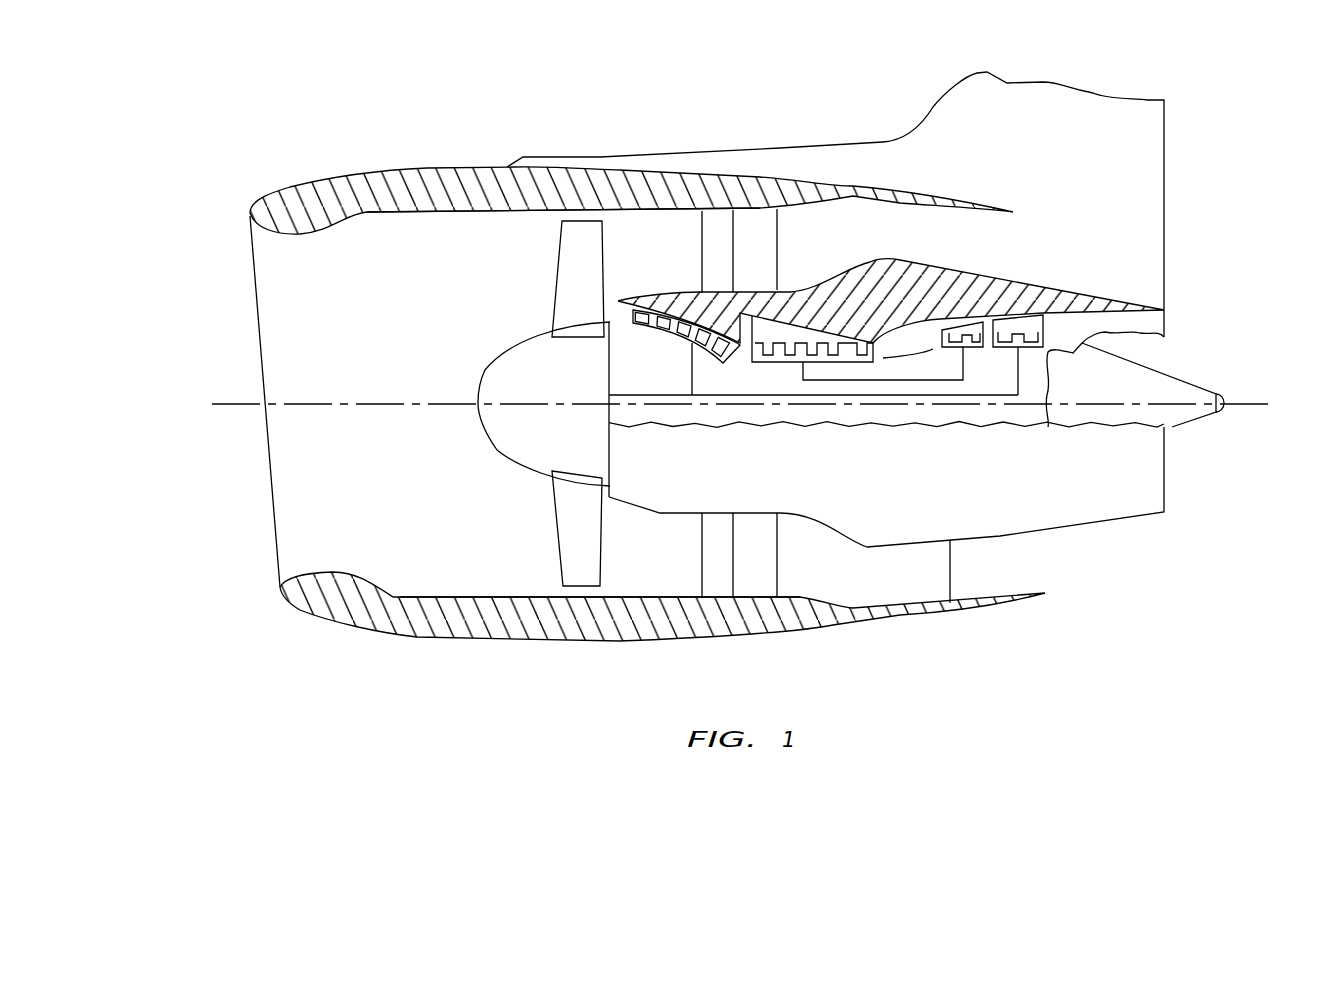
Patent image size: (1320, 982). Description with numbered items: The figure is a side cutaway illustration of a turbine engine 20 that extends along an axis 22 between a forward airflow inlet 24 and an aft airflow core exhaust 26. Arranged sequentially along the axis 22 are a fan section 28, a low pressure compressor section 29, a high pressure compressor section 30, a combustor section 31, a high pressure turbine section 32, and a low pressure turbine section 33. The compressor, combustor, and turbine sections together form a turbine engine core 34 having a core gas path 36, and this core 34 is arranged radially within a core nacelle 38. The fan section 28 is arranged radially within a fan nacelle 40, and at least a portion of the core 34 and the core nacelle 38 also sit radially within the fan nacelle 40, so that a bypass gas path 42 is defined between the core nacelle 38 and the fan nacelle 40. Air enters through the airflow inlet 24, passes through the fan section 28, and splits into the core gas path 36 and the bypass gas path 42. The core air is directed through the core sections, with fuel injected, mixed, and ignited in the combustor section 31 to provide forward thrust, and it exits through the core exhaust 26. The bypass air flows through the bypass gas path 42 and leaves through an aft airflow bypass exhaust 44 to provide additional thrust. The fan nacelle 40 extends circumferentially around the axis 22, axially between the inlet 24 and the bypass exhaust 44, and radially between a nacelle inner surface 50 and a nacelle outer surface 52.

The turbine engine 20 is at (246, 147).
The axis 22 is at (1240, 400).
The forward airflow inlet 24 is at (261, 552).
The aft airflow core exhaust 26 is at (1162, 358).
The fan section 28 is at (478, 648).
The low pressure compressor section 29 is at (633, 433).
The high pressure compressor section 30 is at (752, 433).
The combustor section 31 is at (940, 433).
The high pressure turbine section 32 is at (943, 433).
The low pressure turbine section 33 is at (989, 433).
The turbine engine core 34 is at (633, 477).
The core gas path 36 is at (933, 338).
The core nacelle 38 is at (1057, 290).
The fan nacelle 40 is at (428, 168).
The bypass gas path 42 is at (834, 250).
The aft airflow bypass exhaust 44 is at (1005, 248).
The nacelle inner surface 50 is at (390, 212).
The nacelle outer surface 52 is at (373, 175).